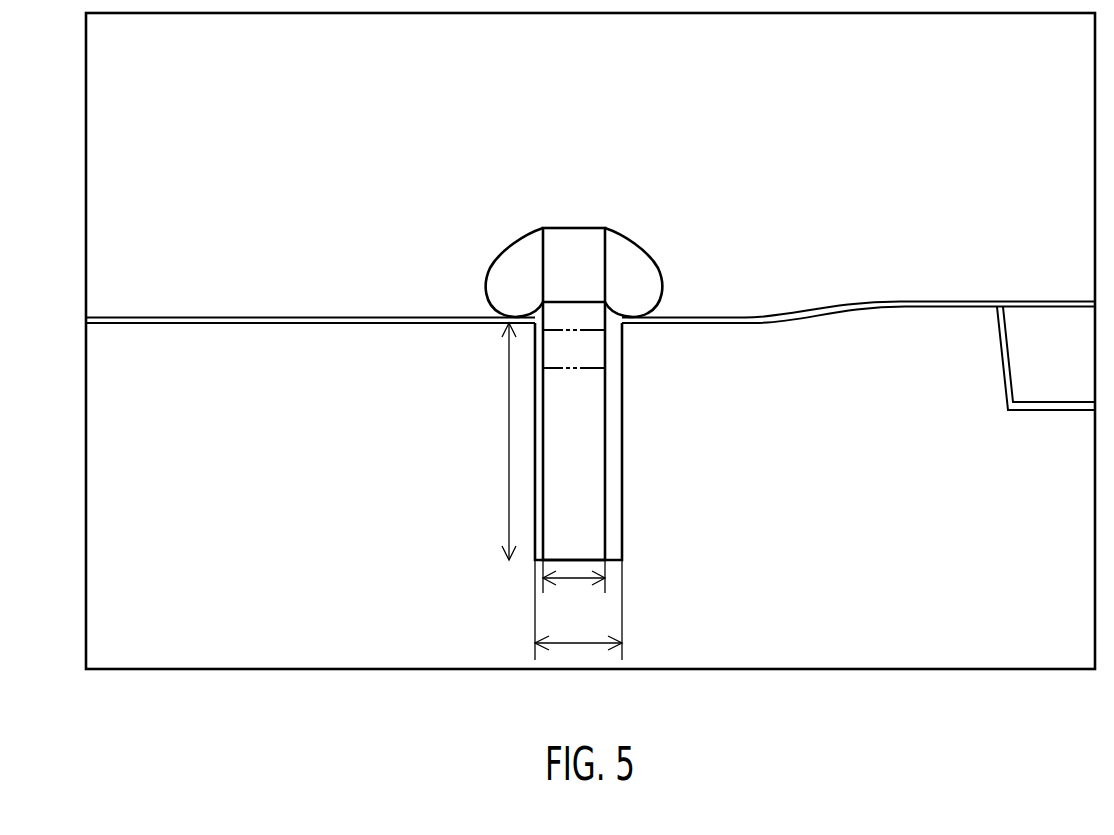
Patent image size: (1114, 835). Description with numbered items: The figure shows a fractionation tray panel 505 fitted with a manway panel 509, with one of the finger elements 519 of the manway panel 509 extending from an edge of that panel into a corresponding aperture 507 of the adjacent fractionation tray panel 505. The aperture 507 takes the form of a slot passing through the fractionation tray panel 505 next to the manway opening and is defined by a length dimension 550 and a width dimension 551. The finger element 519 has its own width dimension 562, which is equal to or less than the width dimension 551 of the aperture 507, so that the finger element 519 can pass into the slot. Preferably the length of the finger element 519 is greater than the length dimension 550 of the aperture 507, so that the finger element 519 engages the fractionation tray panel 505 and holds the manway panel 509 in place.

The fractionation tray panel 505 is at (316, 532).
The manway panel 509 is at (313, 230).
The aperture 507 is at (622, 403).
The finger element 519 is at (592, 455).
The length dimension 550 is at (509, 430).
The width dimension 551 is at (580, 644).
The width dimension 562 is at (578, 578).